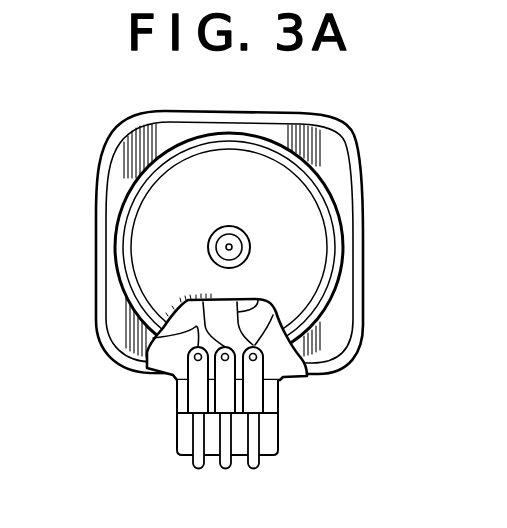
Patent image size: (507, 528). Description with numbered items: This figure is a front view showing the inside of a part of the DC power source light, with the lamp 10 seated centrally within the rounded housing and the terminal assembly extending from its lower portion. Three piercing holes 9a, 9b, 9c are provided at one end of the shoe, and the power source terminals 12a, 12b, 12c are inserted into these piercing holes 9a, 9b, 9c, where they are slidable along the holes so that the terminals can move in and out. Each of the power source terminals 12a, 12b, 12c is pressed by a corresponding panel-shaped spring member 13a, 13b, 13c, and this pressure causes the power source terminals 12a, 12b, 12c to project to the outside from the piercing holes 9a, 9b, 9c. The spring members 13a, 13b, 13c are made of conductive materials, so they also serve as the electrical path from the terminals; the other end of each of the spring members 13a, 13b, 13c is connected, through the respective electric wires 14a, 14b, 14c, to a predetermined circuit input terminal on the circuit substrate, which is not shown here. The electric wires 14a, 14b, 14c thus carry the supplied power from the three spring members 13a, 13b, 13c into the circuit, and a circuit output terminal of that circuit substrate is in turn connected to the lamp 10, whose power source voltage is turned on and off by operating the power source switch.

The lamp 10 is at (215, 230).
The electric wire 14a is at (160, 333).
The electric wire 14b is at (262, 300).
The electric wire 14c is at (303, 352).
The spring member 13a is at (197, 393).
The spring member 13b is at (222, 404).
The spring member 13c is at (258, 391).
The piercing hole 9a is at (196, 439).
The piercing hole 9b is at (257, 422).
The piercing hole 9c is at (265, 448).
The power source terminal 12a is at (199, 469).
The power source terminal 12b is at (227, 469).
The power source terminal 12c is at (257, 469).